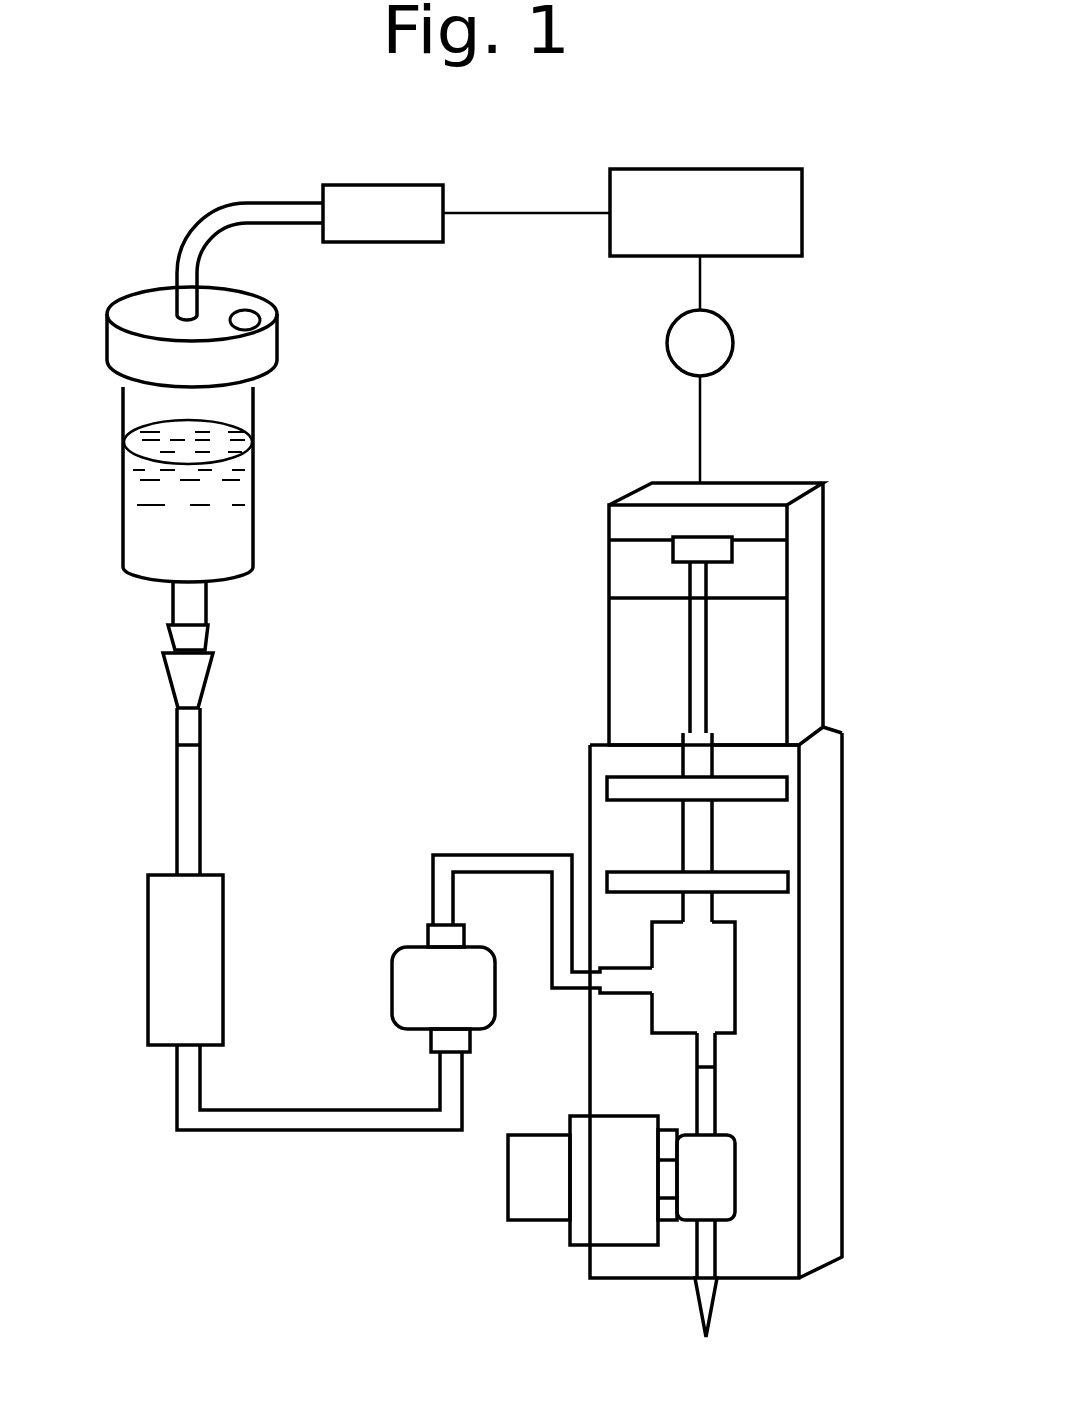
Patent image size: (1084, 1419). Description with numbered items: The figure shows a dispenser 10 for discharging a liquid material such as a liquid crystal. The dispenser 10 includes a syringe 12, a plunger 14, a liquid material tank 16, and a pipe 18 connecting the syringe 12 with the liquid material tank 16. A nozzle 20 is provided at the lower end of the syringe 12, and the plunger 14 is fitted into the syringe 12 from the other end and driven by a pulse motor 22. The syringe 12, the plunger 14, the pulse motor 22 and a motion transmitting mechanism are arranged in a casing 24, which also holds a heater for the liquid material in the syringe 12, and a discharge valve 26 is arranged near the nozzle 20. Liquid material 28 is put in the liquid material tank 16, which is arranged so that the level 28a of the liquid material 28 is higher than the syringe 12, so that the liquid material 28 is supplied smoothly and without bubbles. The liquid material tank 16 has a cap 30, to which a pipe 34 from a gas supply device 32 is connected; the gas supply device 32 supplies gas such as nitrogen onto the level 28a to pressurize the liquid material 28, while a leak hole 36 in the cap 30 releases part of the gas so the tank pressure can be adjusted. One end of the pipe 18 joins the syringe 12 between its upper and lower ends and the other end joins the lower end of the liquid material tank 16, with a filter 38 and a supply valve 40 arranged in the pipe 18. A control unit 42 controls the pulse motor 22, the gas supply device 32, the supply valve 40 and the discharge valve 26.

The dispenser 10 is at (805, 428).
The syringe 12 is at (710, 840).
The plunger 14 is at (707, 650).
The liquid material tank 16 is at (255, 395).
The pipe 18 is at (286, 1132).
The nozzle 20 is at (713, 1297).
The pulse motor 22 is at (733, 325).
The casing 24 is at (827, 962).
The discharge valve 26 is at (720, 1175).
The liquid material 28 is at (237, 527).
The level of the liquid material 28a is at (243, 448).
The cap 30 is at (137, 313).
The gas supply device 32 is at (375, 185).
The pipe 34 is at (235, 220).
The leak hole 36 is at (250, 320).
The filter 38 is at (210, 956).
The supply valve 40 is at (411, 986).
The control unit 42 is at (802, 200).